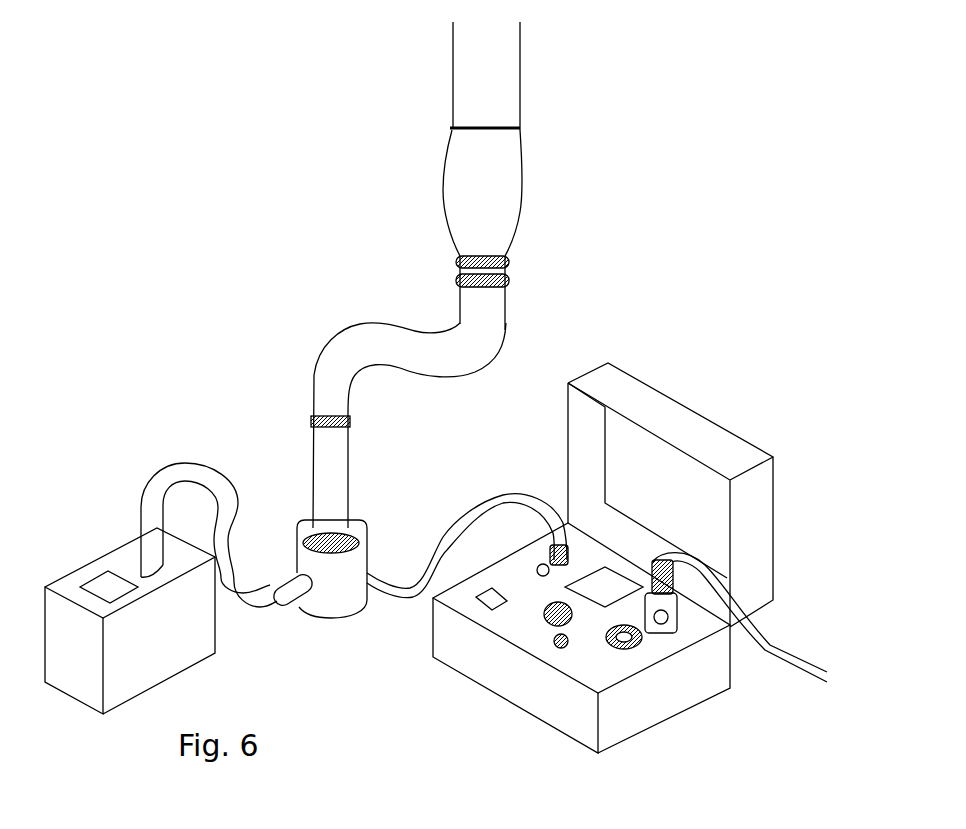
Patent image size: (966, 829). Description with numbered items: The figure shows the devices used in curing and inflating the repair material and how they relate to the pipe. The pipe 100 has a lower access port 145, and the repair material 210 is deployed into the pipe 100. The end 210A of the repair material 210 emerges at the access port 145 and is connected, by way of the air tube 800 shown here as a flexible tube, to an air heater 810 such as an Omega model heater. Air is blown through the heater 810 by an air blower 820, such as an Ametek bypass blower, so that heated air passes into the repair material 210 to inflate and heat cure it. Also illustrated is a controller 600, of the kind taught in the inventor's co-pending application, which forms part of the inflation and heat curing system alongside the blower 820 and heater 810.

The pipe 100 is at (478, 78).
The lower access port 145 is at (511, 118).
The repair material 210 is at (490, 200).
The end of the repair material 210A is at (507, 268).
The hose 800 is at (488, 342).
The heater 810 is at (330, 468).
The air blower 820 is at (124, 564).
The controller 600 is at (787, 542).